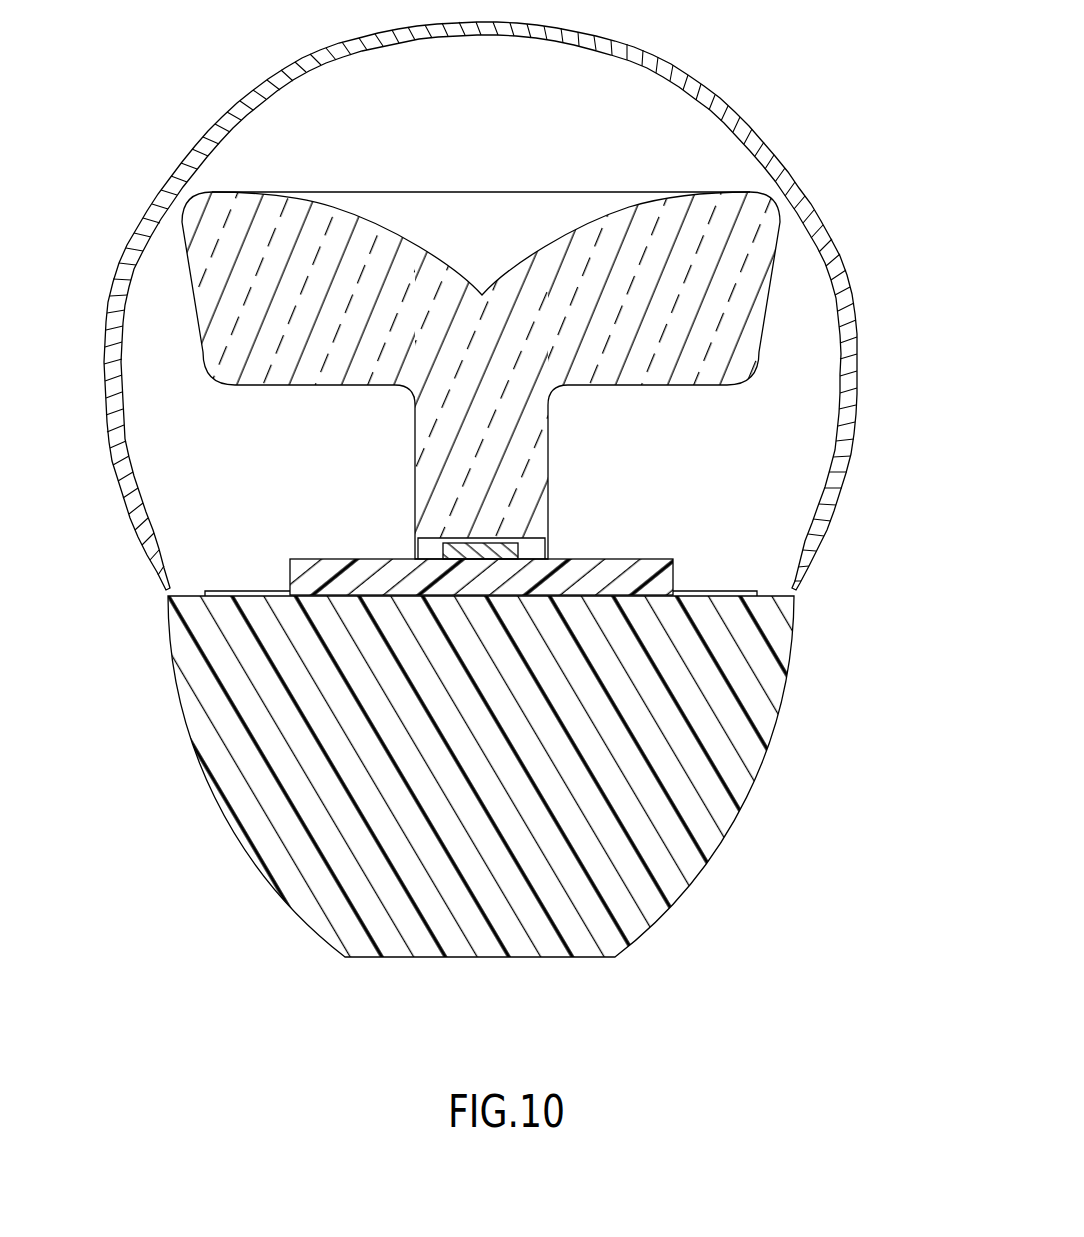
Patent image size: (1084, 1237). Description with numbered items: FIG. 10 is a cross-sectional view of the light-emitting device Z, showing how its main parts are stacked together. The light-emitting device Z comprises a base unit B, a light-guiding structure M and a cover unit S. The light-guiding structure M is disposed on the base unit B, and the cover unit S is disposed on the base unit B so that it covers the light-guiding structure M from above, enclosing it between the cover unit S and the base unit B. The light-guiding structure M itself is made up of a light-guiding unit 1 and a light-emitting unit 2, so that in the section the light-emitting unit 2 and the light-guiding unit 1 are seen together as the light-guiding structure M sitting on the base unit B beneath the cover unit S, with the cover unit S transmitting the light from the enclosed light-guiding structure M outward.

The light-emitting device Z is at (172, 24).
The cover unit S is at (751, 116).
The light-guiding structure M is at (733, 435).
The light-guiding unit 1 is at (623, 388).
The light-emitting unit 2 is at (593, 555).
The base unit B is at (737, 831).